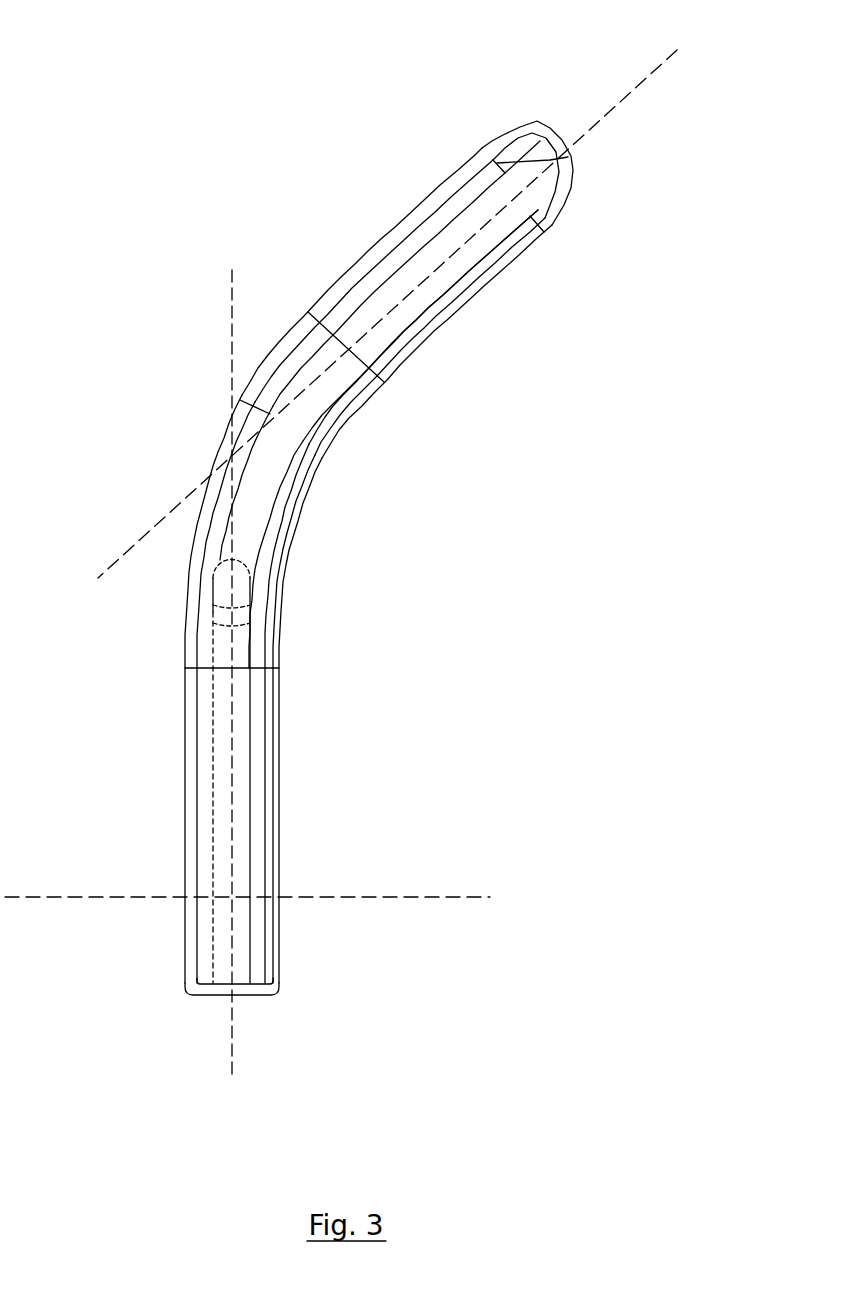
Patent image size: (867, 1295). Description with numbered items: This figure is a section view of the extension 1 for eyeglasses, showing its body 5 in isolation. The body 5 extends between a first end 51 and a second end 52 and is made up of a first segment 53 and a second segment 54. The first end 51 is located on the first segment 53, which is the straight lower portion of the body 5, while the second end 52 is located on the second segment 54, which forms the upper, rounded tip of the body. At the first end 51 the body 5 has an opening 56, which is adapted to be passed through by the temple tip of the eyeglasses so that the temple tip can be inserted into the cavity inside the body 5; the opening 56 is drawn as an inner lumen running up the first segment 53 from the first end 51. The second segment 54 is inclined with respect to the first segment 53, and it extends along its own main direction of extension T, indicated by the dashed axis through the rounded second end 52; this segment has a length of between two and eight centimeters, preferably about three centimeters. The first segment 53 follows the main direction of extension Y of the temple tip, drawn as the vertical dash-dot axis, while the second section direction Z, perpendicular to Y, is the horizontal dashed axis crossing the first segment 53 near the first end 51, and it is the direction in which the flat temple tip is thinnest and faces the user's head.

The extension 1 is at (518, 370).
The body 5 is at (218, 446).
The first end 51 is at (199, 998).
The second end 52 is at (547, 122).
The first segment 53 is at (187, 740).
The second segment 54 is at (362, 255).
The opening 56 is at (243, 998).
The main direction of extension of the second segment T is at (587, 132).
The main direction of extension of the temple tip Y is at (230, 277).
The second section direction Z is at (394, 893).